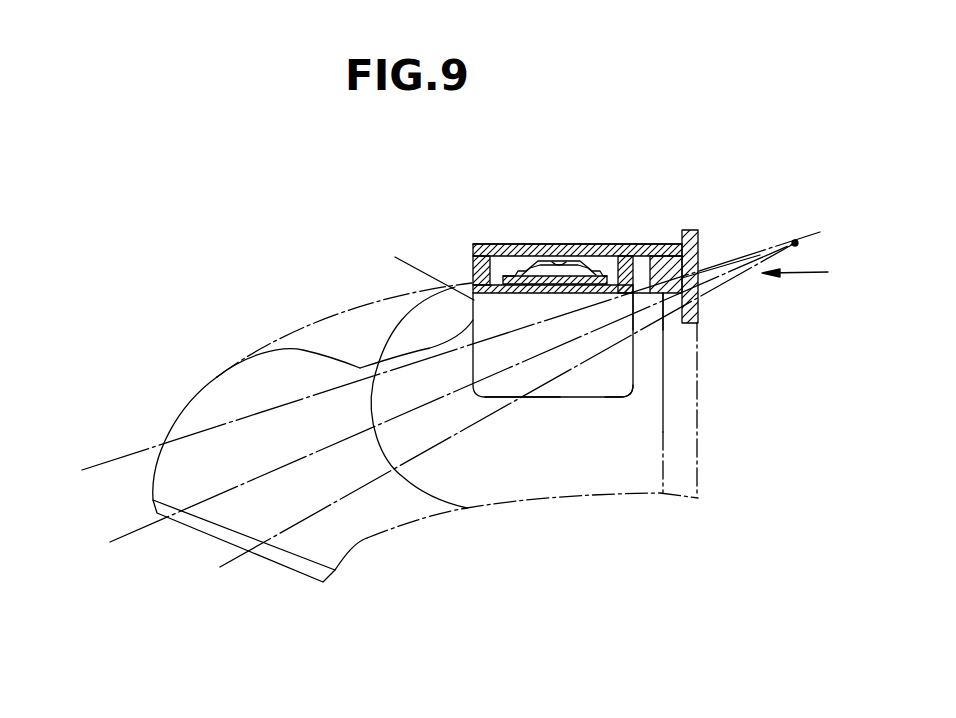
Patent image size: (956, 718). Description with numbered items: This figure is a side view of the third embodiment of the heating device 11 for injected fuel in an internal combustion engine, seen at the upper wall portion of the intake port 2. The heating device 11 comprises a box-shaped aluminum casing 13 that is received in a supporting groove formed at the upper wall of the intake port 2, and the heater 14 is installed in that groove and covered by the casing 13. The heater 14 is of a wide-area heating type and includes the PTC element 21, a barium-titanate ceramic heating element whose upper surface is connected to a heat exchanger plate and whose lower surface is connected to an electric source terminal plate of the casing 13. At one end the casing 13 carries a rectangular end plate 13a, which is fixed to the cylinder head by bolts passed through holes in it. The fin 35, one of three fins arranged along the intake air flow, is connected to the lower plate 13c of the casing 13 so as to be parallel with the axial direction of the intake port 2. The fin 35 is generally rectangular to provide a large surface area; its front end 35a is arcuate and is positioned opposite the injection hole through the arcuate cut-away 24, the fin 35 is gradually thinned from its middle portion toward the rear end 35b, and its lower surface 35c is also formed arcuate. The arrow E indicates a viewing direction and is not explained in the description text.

The intake port 2 is at (467, 493).
The heating device 11 is at (555, 228).
The casing 13 is at (515, 244).
The end plate 13a is at (697, 240).
The lower plate 13c is at (640, 327).
The heater 14 is at (590, 262).
The PTC element 21 is at (420, 268).
The cut-away 24 is at (700, 288).
The fin 35 is at (586, 400).
The front end 35a is at (633, 358).
The rear end 35b is at (516, 388).
The lower surface 35c is at (605, 398).
The eye of observer E is at (806, 274).